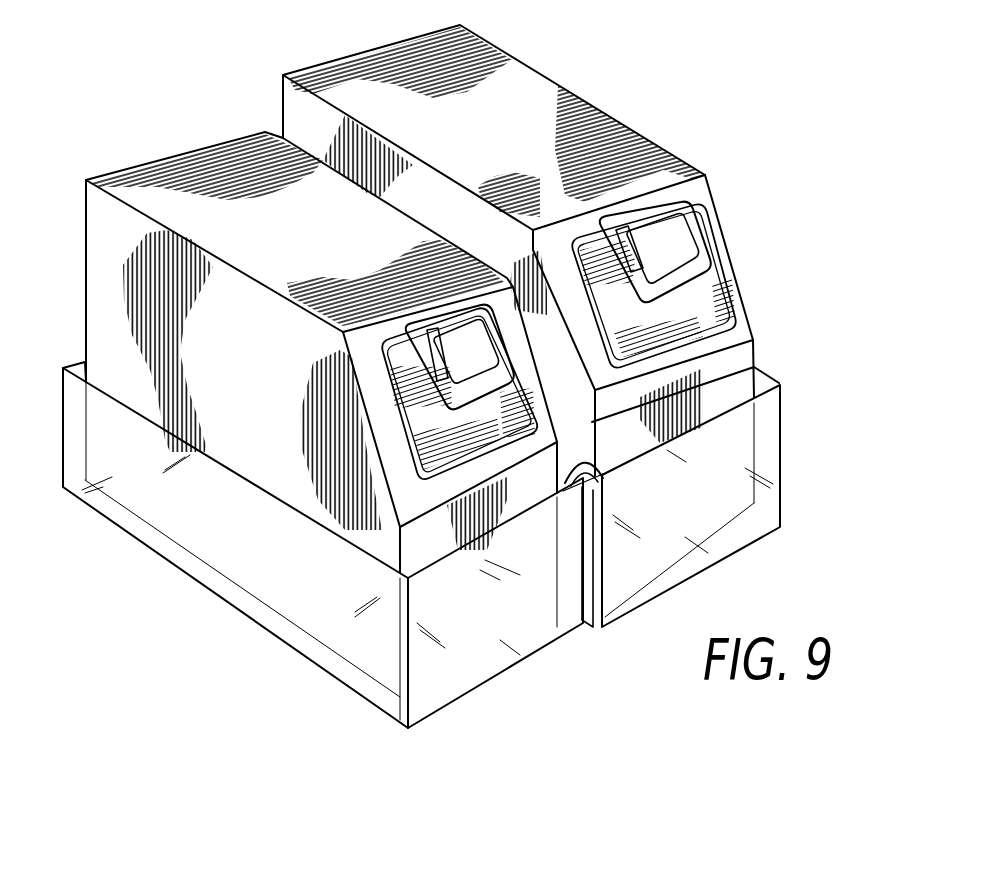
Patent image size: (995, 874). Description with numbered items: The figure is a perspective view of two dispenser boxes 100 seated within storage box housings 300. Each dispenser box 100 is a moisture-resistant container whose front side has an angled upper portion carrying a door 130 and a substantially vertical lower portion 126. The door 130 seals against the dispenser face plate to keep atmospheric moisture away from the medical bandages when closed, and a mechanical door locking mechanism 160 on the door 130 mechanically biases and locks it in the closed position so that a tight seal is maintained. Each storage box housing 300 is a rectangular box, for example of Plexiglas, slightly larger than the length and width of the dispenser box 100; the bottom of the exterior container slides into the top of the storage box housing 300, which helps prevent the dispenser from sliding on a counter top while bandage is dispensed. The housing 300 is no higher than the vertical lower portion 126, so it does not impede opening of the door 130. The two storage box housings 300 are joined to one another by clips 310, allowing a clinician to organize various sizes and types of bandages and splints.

The dispenser box 100 is at (200, 183).
The vertical lower portion 126 is at (735, 367).
The door 130 is at (700, 302).
The mechanical door locking mechanism 160 is at (710, 214).
The storage box housing 300 is at (285, 576).
The clips 310 is at (565, 478).